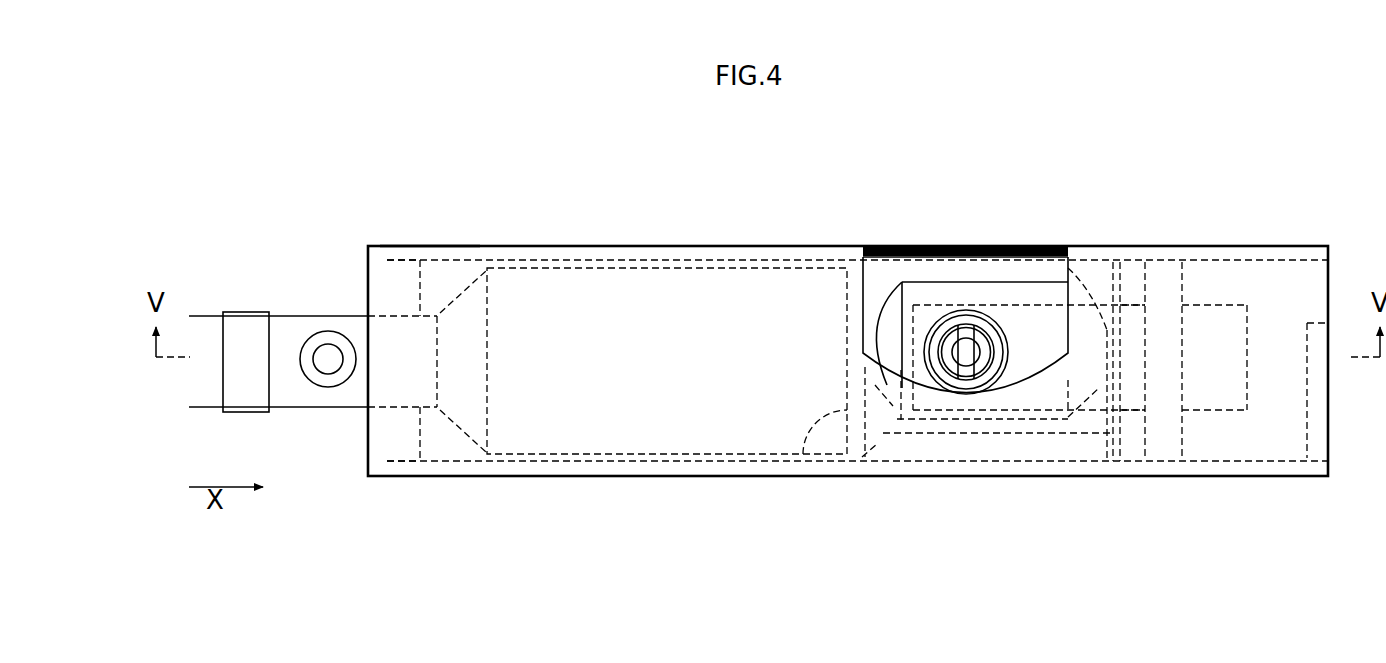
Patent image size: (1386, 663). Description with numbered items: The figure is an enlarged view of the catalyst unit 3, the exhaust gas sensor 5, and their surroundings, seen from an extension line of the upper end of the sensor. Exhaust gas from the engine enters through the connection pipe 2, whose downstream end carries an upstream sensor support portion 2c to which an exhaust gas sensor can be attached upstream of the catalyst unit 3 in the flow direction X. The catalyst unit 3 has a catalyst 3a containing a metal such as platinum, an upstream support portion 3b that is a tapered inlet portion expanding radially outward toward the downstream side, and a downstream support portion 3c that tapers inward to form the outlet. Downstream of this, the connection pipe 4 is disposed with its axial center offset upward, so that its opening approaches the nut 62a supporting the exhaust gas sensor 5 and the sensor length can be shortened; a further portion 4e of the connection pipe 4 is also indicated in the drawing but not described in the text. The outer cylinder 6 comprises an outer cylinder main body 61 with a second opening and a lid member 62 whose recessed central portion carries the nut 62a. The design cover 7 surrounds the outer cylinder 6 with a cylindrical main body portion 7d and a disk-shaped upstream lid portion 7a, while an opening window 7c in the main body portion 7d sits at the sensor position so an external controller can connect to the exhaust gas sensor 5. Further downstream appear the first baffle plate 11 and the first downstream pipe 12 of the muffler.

The connection pipe 2 is at (357, 395).
The upstream sensor support portion 2c is at (314, 378).
The catalyst unit 3 is at (642, 427).
The catalyst 3a is at (672, 415).
The upstream support portion 3b is at (478, 458).
The downstream support portion 3c is at (813, 477).
The connection pipe 4 is at (1221, 322).
The frame curved portion 4e is at (1248, 334).
The exhaust gas sensor 5 is at (950, 365).
The outer cylinder 6 is at (1028, 421).
The outer cylinder main body 61 is at (1193, 465).
The lid member 62 is at (1028, 358).
The nut 62a is at (1029, 424).
The design cover 7 is at (1258, 246).
The upstream lid portion 7a is at (418, 292).
The opening window 7c is at (1040, 272).
The main body portion 7d is at (427, 246).
The first baffle plate 11 is at (1163, 262).
The first downstream pipe 12 is at (1304, 470).